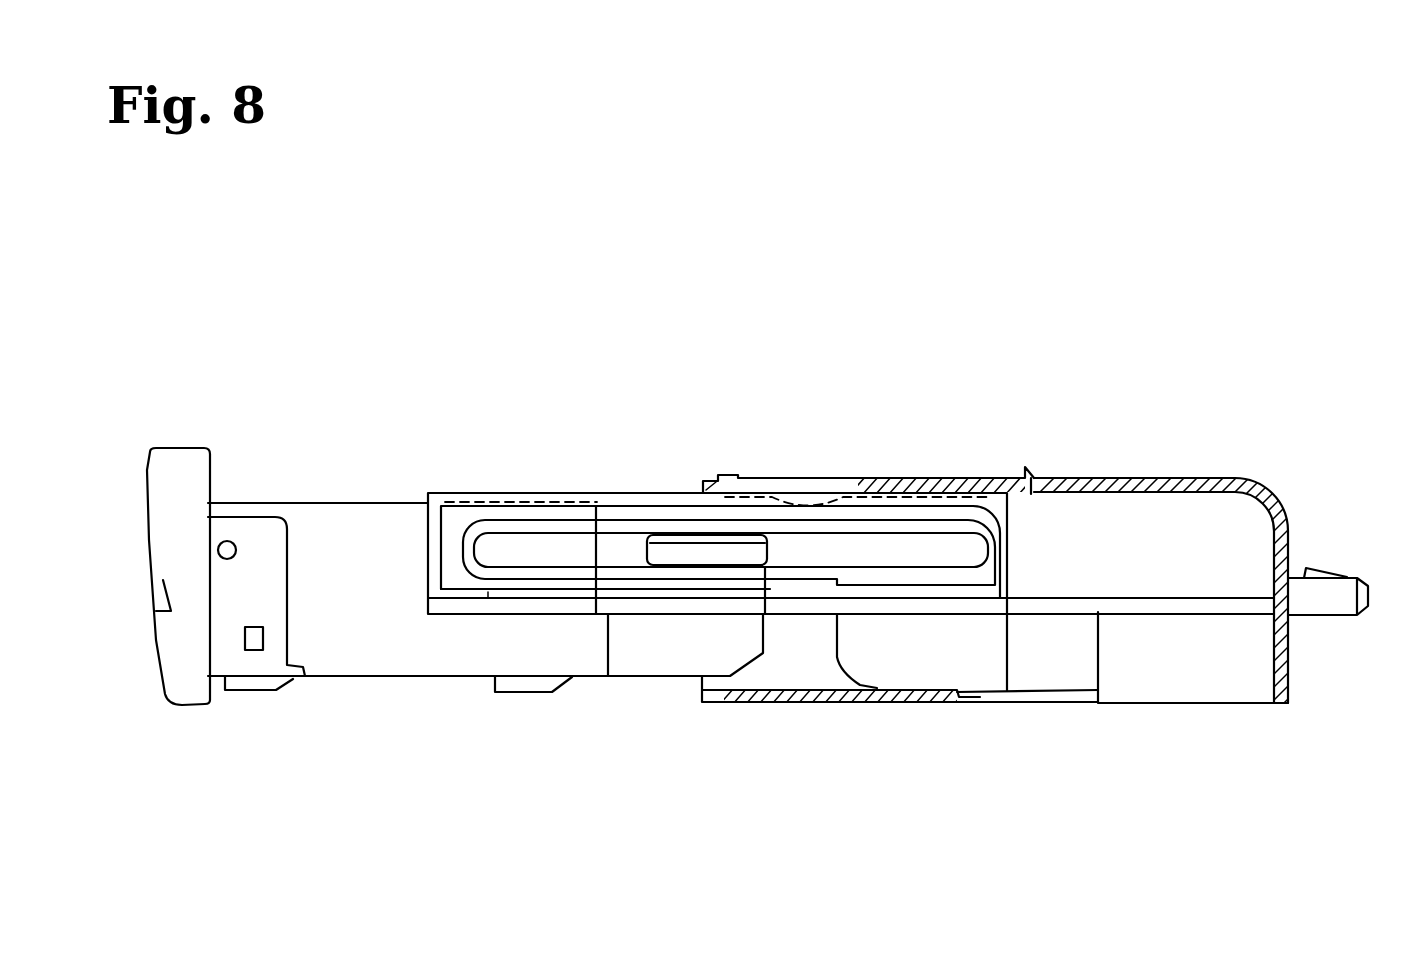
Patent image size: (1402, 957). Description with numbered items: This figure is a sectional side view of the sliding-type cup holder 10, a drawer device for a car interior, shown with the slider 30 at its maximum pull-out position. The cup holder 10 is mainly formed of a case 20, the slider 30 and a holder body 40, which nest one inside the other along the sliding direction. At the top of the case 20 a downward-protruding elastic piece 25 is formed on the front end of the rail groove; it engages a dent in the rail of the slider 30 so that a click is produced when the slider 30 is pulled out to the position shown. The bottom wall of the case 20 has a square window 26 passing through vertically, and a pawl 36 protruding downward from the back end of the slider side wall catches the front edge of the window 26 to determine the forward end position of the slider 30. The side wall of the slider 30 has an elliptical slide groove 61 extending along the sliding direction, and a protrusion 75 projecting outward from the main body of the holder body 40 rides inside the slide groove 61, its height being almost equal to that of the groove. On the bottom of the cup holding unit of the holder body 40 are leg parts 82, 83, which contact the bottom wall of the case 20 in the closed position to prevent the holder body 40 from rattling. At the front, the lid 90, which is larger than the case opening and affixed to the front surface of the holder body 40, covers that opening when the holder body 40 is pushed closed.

The cup holder 10 is at (456, 264).
The case 20 is at (1147, 478).
The elastic piece 25 is at (799, 495).
The square window 26 is at (1130, 688).
The slider 30 is at (509, 492).
The pawl 36 is at (978, 700).
The holder body 40 is at (318, 521).
The slide groove 61 is at (620, 553).
The protrusion 75 is at (677, 553).
The leg part 82 is at (255, 688).
The leg part 83 is at (520, 691).
The lid 90 is at (180, 487).